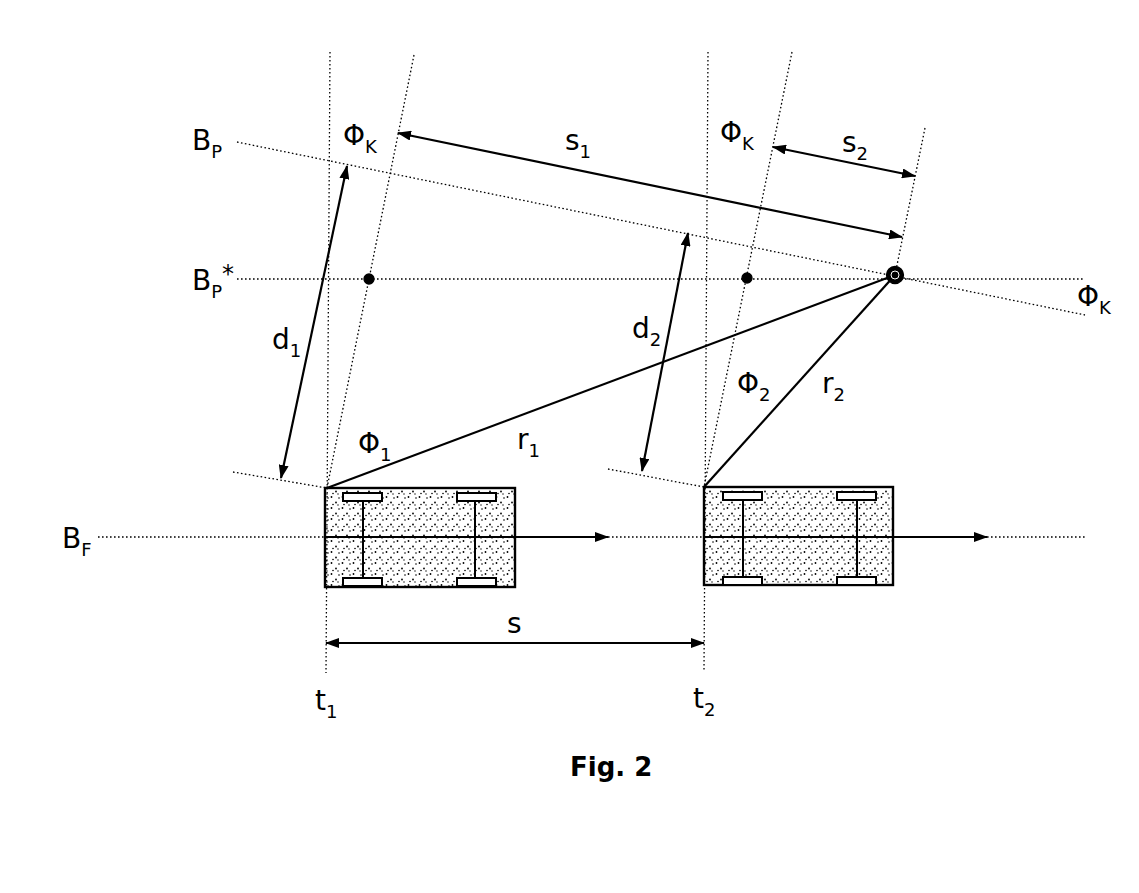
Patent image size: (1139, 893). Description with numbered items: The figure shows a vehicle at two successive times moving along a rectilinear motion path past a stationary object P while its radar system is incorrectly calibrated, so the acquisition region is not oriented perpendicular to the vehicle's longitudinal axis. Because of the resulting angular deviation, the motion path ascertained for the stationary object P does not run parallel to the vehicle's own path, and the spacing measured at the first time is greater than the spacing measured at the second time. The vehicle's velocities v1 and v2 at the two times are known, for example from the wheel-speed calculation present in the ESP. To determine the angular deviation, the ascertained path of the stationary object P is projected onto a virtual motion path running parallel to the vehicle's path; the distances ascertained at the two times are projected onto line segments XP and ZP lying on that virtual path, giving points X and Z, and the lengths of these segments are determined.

The stationary object P is at (910, 260).
The projection point X is at (381, 298).
The projection point Z is at (759, 296).
The velocity of the vehicle at time t1 v1 is at (449, 537).
The velocity of the vehicle at time t2 v2 is at (828, 536).